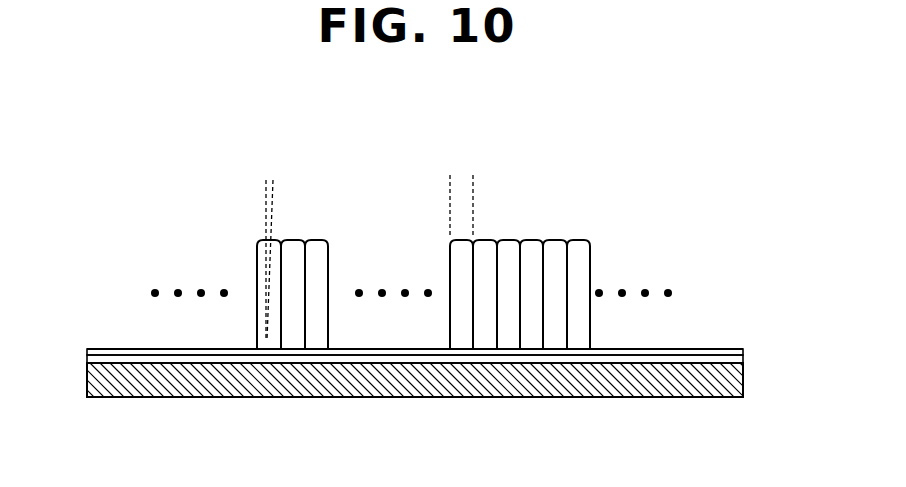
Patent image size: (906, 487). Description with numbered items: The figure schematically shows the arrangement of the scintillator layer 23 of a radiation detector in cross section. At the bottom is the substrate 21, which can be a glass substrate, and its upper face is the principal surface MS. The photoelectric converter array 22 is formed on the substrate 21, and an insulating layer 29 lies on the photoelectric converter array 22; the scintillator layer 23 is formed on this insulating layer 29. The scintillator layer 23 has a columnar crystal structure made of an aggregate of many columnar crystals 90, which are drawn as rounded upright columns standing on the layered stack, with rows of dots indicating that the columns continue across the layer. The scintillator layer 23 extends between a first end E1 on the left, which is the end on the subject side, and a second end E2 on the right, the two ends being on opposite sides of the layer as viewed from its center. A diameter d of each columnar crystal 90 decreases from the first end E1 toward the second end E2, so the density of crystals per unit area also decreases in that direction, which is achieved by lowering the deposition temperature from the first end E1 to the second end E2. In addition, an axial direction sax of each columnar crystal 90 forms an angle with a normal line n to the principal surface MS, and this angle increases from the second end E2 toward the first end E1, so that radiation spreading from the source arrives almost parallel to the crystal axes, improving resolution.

The substrate 21 is at (433, 388).
The photoelectric converter array 22 is at (335, 360).
The insulating layer 29 is at (660, 351).
The scintillator layer 23 is at (358, 211).
The columnar crystals 90 is at (578, 259).
The principal surface MS is at (167, 361).
The axial direction sax is at (264, 232).
The normal line n is at (272, 233).
The diameter d is at (472, 196).
The first end E1 is at (138, 293).
The second end E2 is at (722, 293).